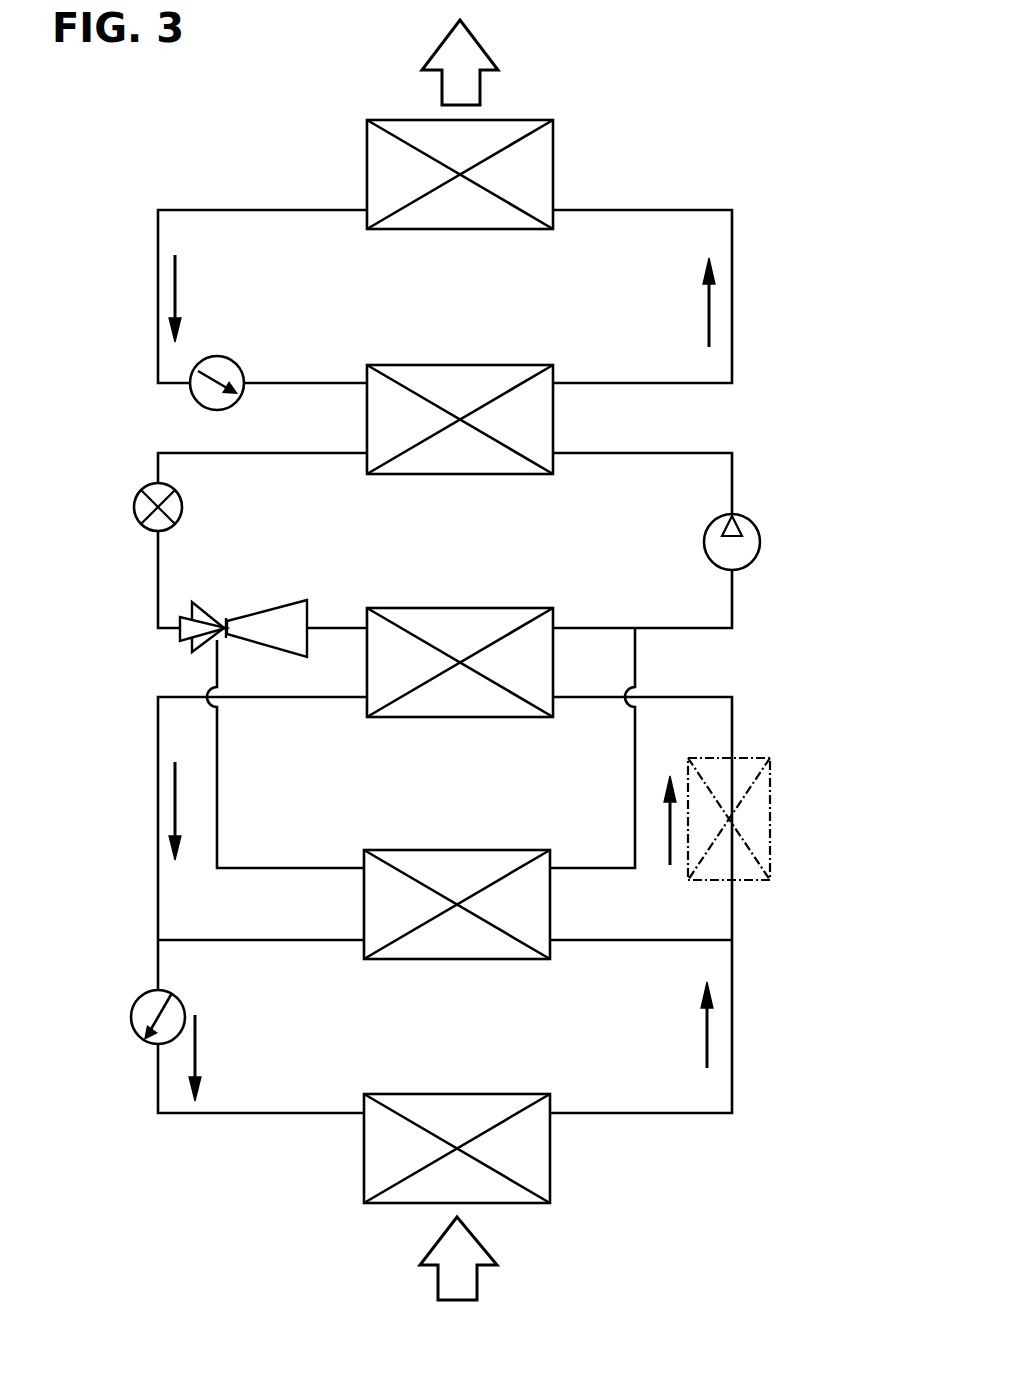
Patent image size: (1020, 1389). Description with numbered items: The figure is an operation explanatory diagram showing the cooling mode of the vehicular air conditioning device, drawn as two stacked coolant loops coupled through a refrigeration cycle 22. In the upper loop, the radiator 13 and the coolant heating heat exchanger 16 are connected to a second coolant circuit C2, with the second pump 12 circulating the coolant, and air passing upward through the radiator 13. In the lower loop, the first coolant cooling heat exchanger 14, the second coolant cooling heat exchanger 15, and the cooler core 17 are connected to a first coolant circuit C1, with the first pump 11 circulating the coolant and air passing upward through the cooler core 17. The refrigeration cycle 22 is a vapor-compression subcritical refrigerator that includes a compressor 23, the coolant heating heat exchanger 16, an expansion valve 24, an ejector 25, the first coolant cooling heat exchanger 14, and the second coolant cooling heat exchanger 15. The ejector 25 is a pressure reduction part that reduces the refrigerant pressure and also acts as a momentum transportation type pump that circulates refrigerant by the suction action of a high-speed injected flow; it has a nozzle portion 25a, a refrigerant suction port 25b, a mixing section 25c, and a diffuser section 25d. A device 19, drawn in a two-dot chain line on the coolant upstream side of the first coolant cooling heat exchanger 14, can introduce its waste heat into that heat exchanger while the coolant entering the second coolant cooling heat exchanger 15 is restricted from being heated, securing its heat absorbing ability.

The first pump 11 is at (130, 1025).
The second pump 12 is at (222, 356).
The radiator 13 is at (432, 232).
The first coolant cooling heat exchanger 14 is at (420, 607).
The second coolant cooling heat exchanger 15 is at (490, 960).
The coolant heating heat exchanger 16 is at (490, 476).
The cooler core 17 is at (418, 1094).
The device 19 is at (770, 790).
The refrigeration cycle 22 is at (738, 476).
The compressor 23 is at (752, 560).
The expansion valve 24 is at (134, 507).
The ejector 25 is at (227, 611).
The nozzle portion 25a is at (190, 650).
The refrigerant suction port 25b is at (222, 637).
The mixing section 25c is at (232, 621).
The diffuser section 25d is at (300, 627).
The first coolant circuit C1 is at (738, 1057).
The second coolant circuit C2 is at (737, 262).